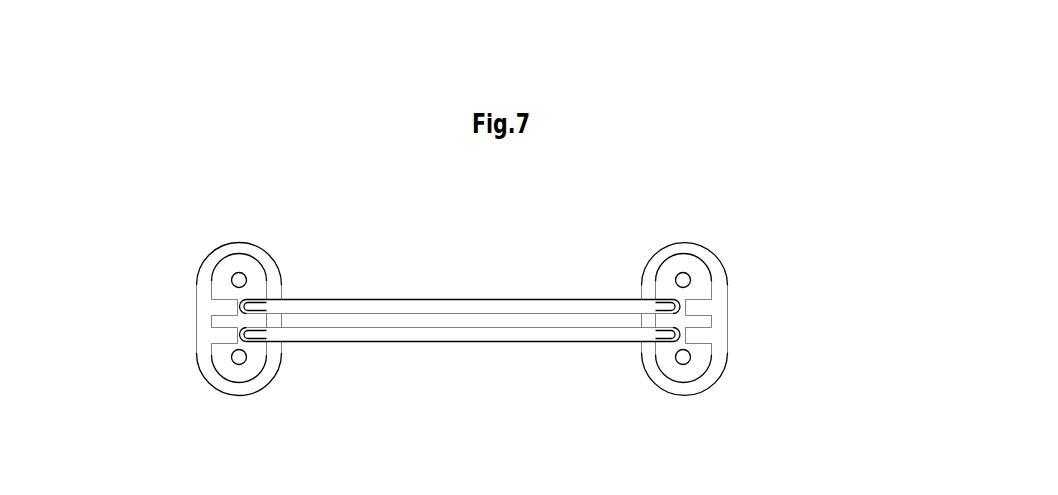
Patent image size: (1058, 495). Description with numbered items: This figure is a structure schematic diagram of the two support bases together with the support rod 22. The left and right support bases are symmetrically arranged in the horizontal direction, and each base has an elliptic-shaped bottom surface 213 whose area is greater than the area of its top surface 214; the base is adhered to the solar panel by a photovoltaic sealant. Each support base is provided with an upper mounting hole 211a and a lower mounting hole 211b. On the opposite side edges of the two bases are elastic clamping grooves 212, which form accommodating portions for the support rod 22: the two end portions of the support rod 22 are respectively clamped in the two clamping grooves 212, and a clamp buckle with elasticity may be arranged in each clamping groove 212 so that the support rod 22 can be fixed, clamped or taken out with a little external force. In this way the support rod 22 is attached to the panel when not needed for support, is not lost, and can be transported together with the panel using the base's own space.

The support rod 22 is at (564, 377).
The upper mounting hole 211a is at (765, 234).
The lower mounting hole 211b is at (691, 360).
The clamping groove 212 is at (780, 301).
The bottom surface 213 is at (181, 320).
The top surface 214 is at (173, 301).